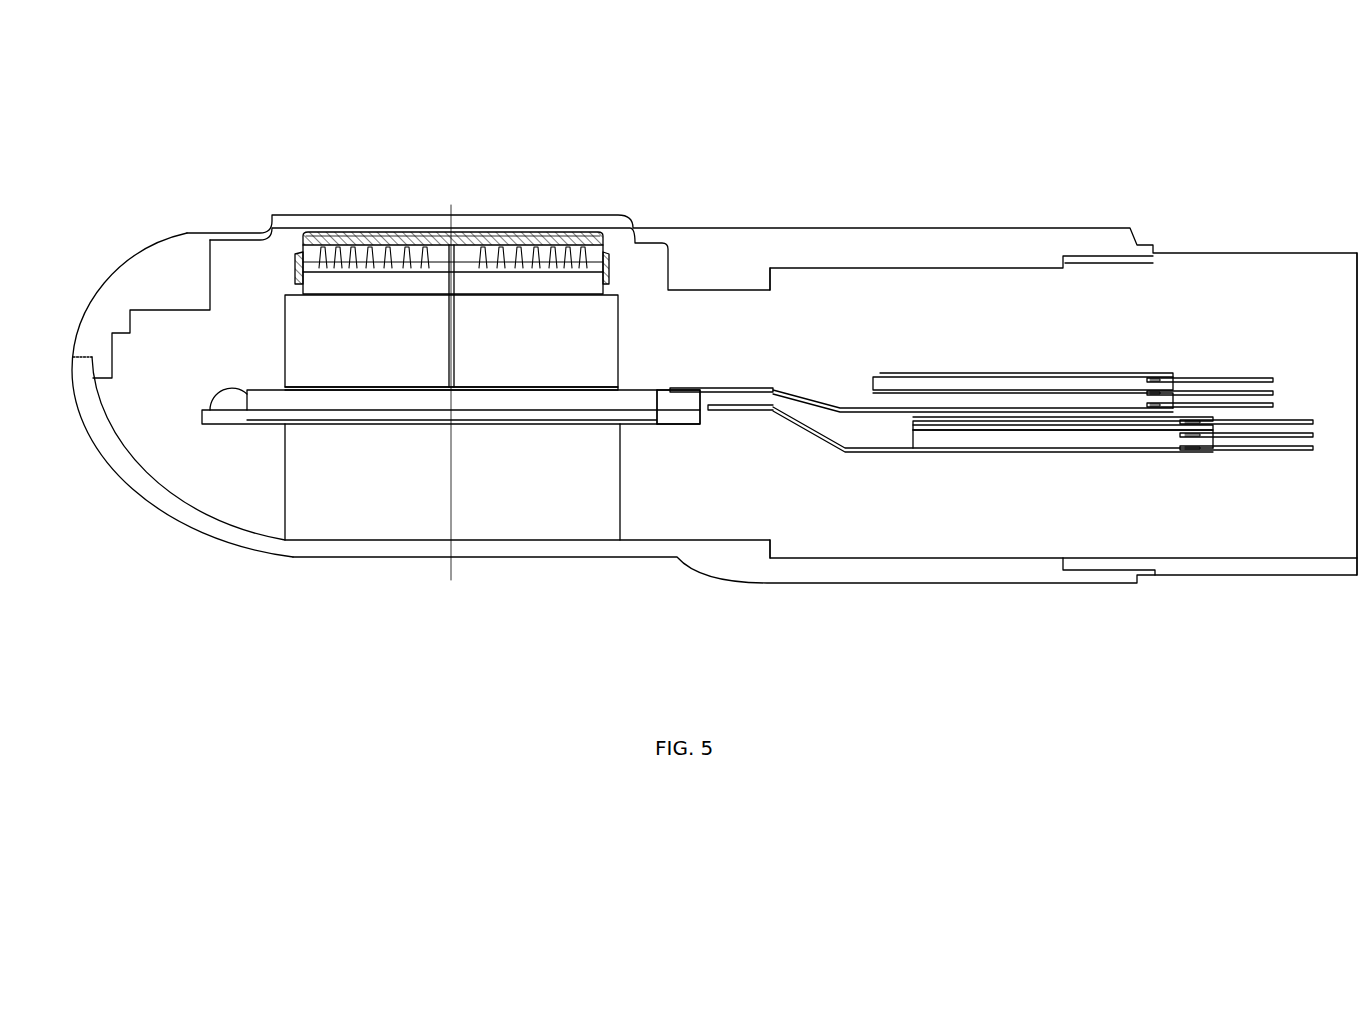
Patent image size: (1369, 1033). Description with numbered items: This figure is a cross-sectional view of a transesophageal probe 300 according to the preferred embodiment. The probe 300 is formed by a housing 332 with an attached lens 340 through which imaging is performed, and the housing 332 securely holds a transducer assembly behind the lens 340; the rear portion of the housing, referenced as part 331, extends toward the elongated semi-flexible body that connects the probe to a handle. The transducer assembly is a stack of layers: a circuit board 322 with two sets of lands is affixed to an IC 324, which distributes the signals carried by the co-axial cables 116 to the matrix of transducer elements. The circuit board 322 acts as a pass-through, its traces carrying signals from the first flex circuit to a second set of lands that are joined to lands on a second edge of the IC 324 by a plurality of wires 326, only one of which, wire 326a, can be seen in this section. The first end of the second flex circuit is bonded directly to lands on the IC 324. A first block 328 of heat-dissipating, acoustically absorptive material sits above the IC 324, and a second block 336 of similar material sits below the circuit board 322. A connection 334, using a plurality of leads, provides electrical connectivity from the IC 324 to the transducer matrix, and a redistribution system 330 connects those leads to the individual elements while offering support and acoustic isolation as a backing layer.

The transesophageal probe 300 is at (714, 357).
The lens 340 is at (575, 212).
The housing sleeve 331 is at (873, 570).
The housing 332 is at (352, 230).
The redistribution system 330 is at (606, 268).
The connection 334 is at (456, 332).
The first block 328 is at (295, 326).
The wires 326 is at (419, 424).
The wire 326a is at (248, 393).
The circuit board 322 is at (252, 427).
The second block 336 is at (386, 555).
The IC 324 is at (643, 390).
The co-axial cables 116 is at (1265, 377).